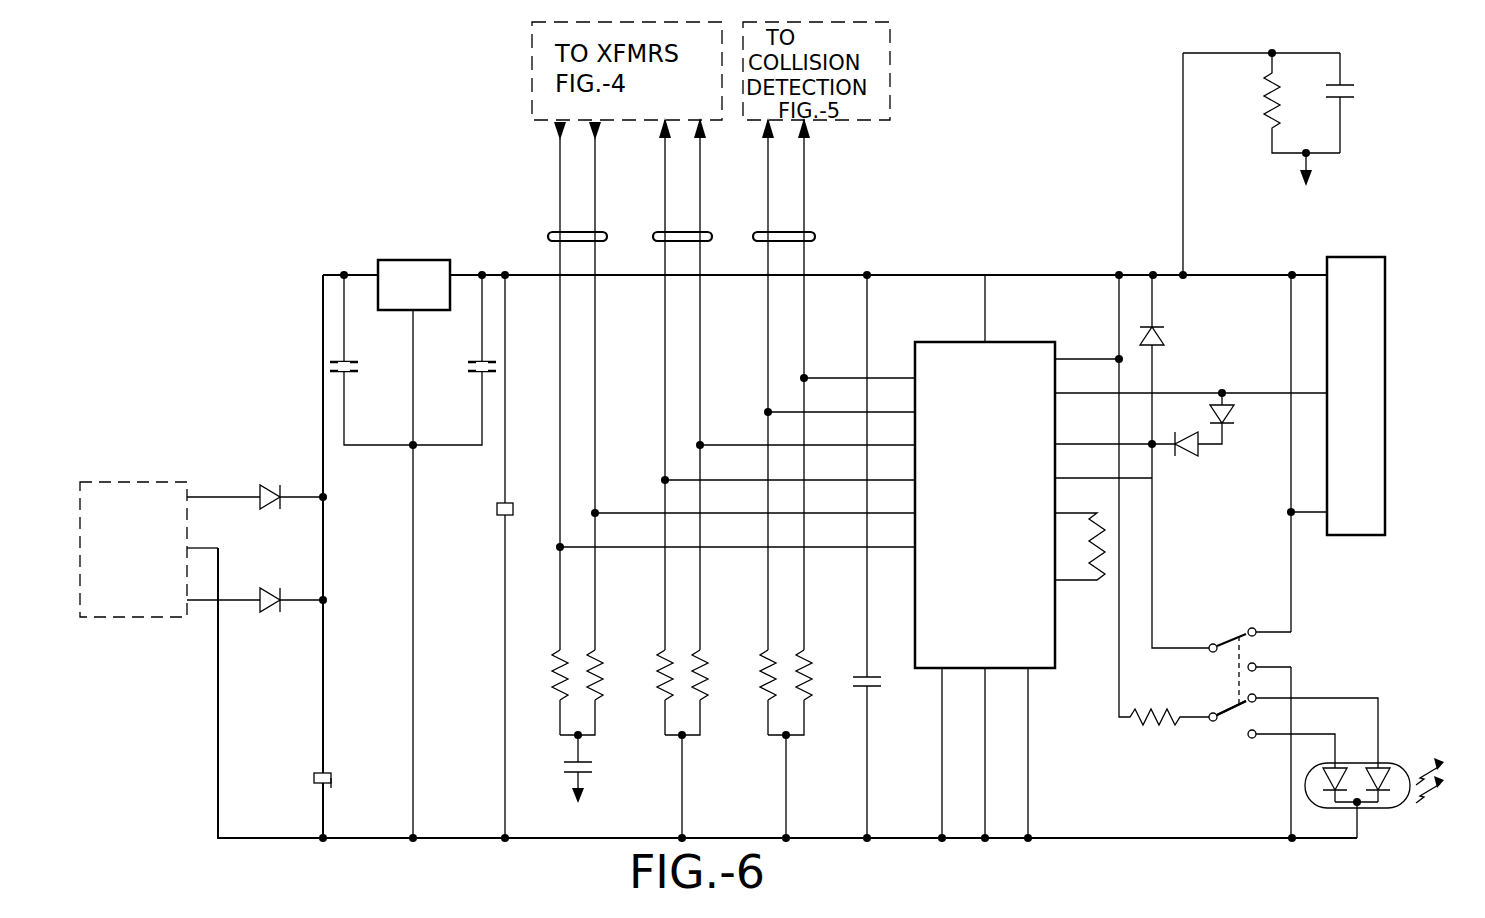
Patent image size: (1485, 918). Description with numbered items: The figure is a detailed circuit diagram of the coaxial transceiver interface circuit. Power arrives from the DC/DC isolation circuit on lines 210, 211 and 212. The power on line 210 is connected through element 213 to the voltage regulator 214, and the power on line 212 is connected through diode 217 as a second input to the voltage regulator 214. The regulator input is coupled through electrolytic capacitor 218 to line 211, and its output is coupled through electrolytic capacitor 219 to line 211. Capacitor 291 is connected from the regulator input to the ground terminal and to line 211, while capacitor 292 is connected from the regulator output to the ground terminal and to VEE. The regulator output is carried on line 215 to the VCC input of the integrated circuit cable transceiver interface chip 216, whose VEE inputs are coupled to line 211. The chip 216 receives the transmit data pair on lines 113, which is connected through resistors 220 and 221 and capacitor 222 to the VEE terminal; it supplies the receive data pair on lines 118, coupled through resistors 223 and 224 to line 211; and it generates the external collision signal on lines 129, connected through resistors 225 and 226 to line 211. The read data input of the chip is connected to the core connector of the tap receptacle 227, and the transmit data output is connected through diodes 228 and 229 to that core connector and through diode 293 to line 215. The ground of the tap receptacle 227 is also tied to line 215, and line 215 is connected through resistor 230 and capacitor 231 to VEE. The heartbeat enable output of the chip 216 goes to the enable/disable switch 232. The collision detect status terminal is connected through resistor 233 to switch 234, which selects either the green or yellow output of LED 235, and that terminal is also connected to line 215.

The transmit pair 113 is at (548, 237).
The receive pair 118 is at (653, 240).
The collision pair 129 is at (815, 237).
The power line 210 is at (213, 496).
The return line 211 is at (465, 838).
The power line 212 is at (205, 602).
The diode 213 is at (266, 490).
The voltage regulator 214 is at (378, 268).
The regulator output line 215 is at (880, 275).
The cable transceiver interface chip 216 is at (958, 340).
The diode 217 is at (268, 588).
The electrolytic capacitor 218 is at (313, 776).
The electrolytic capacitor 219 is at (496, 510).
The resistor 220 is at (552, 676).
The resistor 221 is at (600, 675).
The capacitor 222 is at (592, 770).
The resistor 223 is at (660, 680).
The resistor 224 is at (705, 675).
The resistor 225 is at (763, 680).
The resistor 226 is at (810, 690).
The tap receptacle 227 is at (1345, 535).
The diode 228 is at (1185, 460).
The diode 229 is at (1234, 416).
The resistor 230 is at (1265, 103).
The capacitor 231 is at (1355, 92).
The enable/disable switch 232 is at (1228, 618).
The resistor 233 is at (1150, 710).
The switch 234 is at (1220, 727).
The LED 235 is at (1392, 763).
The capacitor 291 is at (357, 368).
The capacitor 292 is at (470, 368).
The diode 293 is at (1165, 335).